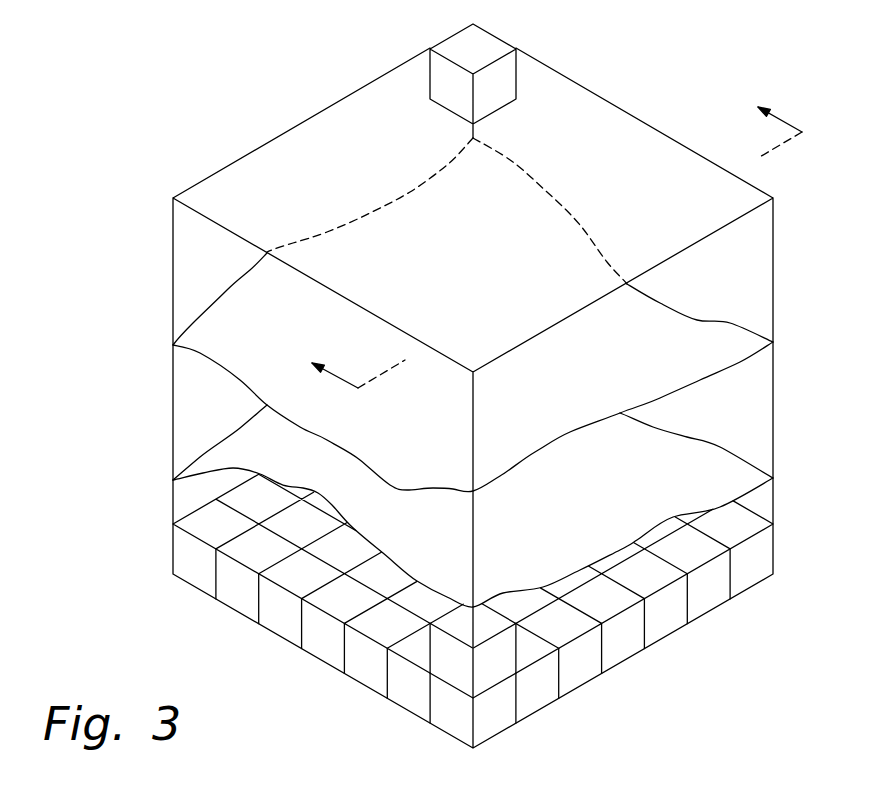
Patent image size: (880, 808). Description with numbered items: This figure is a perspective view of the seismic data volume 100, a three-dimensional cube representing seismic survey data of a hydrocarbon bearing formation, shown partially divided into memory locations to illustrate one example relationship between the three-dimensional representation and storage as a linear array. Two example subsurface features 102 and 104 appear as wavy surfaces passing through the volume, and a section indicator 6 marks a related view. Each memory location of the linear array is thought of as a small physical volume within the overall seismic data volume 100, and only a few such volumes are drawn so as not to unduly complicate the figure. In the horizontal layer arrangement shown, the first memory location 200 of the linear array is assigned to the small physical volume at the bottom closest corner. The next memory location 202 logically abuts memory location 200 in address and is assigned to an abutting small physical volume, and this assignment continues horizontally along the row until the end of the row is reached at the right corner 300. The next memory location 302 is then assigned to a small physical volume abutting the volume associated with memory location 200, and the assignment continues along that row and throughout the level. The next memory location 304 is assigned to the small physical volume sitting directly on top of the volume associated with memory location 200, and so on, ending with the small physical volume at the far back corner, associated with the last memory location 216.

The seismic data volume 100 is at (205, 80).
The subsurface feature 102 is at (715, 328).
The subsurface feature 104 is at (715, 458).
The first memory location 200 is at (495, 727).
The next memory location 202 is at (538, 702).
The last memory location 216 is at (483, 45).
The right corner 300 is at (501, 623).
The next memory location 302 is at (402, 697).
The next memory location 304 is at (458, 675).
The section line for Fig. 6 is at (547, 239).